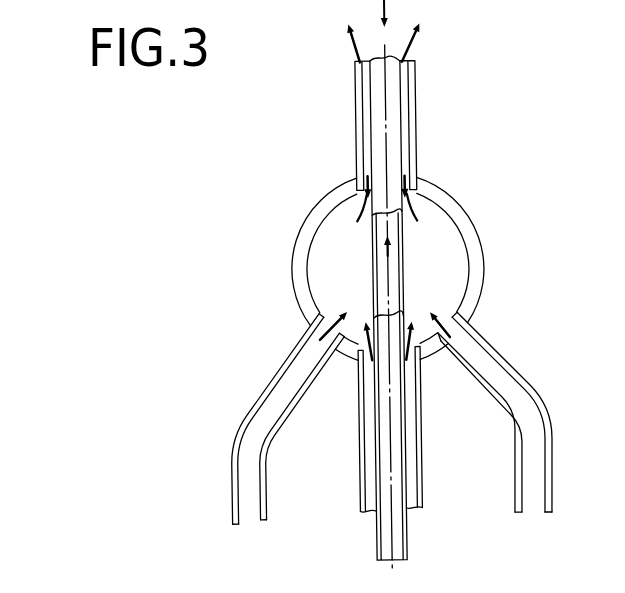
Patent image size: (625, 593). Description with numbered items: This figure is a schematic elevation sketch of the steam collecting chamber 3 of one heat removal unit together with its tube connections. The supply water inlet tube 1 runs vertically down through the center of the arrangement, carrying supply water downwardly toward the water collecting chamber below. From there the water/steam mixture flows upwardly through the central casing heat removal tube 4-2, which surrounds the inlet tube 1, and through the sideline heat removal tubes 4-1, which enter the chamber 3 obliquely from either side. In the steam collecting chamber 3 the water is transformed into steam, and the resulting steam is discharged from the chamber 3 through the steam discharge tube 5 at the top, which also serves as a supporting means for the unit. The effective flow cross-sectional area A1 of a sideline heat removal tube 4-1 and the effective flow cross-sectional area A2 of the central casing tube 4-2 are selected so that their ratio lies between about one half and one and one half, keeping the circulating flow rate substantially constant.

The supply water inlet tube 1 is at (367, 285).
The steam collecting chamber 3 is at (368, 269).
The sideline heat removal tube 4-1 is at (377, 417).
The central casing heat removal tube 4-2 is at (426, 459).
The steam discharge tube 5 is at (401, 117).
The effective flow cross-sectional area of sideline heat removal tube A1 is at (276, 329).
The effective flow cross-sectional area of central casing heat exchange tube A2 is at (479, 307).